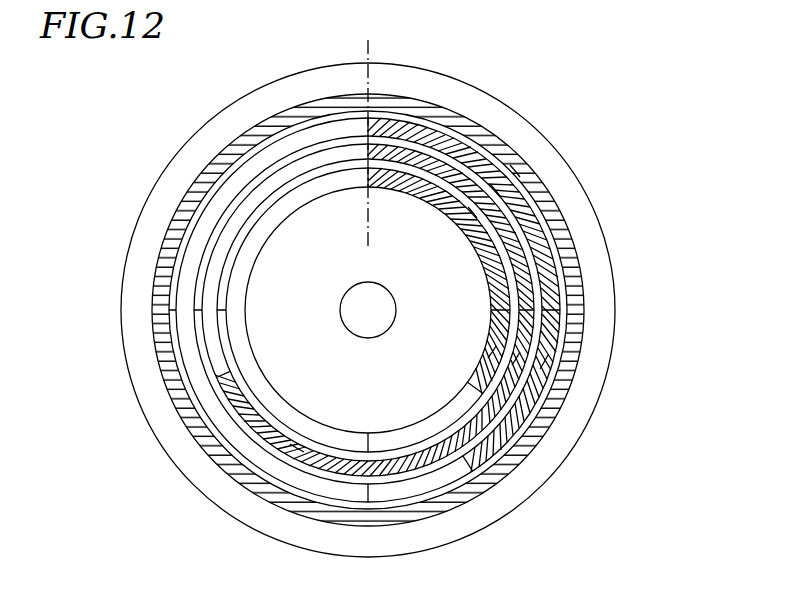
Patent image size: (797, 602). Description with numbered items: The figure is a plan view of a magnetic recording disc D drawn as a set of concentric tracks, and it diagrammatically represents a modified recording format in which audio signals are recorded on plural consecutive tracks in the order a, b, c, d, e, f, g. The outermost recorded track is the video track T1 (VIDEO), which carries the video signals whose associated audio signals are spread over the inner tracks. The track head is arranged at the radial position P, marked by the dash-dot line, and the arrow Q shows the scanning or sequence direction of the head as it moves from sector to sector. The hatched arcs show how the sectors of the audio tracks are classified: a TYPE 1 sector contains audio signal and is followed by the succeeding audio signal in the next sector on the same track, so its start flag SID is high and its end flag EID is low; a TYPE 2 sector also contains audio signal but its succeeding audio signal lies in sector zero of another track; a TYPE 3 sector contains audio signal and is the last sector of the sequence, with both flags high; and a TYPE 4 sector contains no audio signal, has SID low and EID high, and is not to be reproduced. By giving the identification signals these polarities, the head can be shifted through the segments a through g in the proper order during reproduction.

The optical disc D is at (538, 155).
The track T1 is at (541, 189).
The track head position P is at (383, 48).
The scanning direction Q is at (496, 109).
The type 1 sector TYPE 1 is at (556, 261).
The type 2 sector TYPE 2 is at (360, 477).
The type 3 sector TYPE 3 is at (508, 337).
The type 4 sector TYPE 4 is at (236, 263).
The audio track a is at (505, 177).
The audio track b is at (539, 372).
The audio track c is at (487, 198).
The audio track d is at (512, 367).
The audio track e is at (304, 454).
The audio track f is at (466, 219).
The audio track g is at (486, 359).